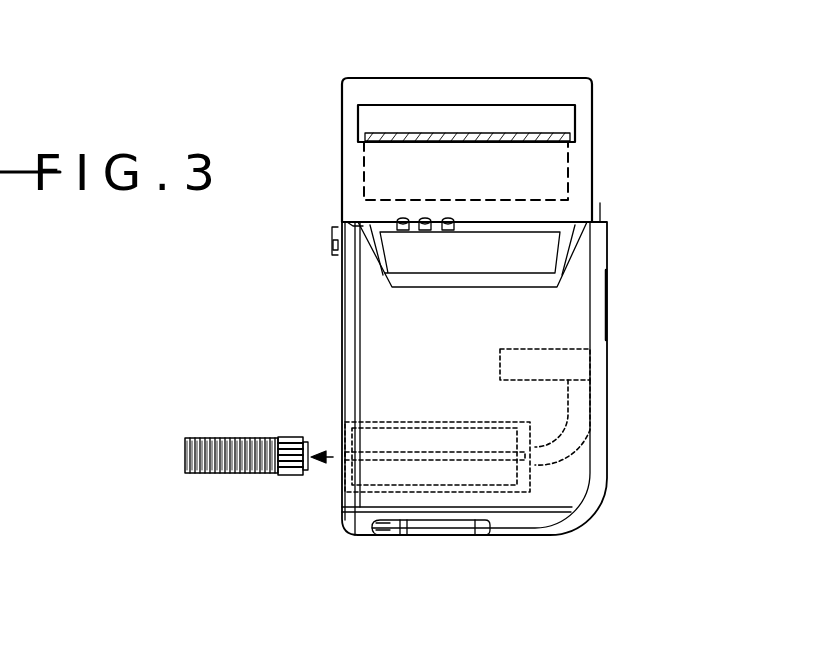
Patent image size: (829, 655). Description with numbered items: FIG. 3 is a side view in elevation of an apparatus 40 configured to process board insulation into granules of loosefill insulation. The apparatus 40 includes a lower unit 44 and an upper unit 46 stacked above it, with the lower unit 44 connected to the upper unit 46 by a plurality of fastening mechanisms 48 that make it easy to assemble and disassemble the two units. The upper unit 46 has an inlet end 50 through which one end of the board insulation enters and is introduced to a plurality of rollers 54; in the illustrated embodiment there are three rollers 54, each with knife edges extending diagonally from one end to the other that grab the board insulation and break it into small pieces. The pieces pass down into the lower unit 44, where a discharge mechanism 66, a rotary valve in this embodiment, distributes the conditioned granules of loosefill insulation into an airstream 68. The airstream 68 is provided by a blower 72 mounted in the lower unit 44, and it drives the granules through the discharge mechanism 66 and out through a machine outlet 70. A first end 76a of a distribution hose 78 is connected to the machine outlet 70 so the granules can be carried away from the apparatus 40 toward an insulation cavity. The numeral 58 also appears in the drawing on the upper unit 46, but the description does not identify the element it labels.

The apparatus 40 is at (708, 110).
The lower unit 44 is at (340, 350).
The upper unit 46 is at (342, 110).
The fastening mechanisms 48 is at (333, 230).
The inlet end 50 is at (575, 118).
The rollers 54 is at (568, 172).
The lid housing 58 is at (428, 78).
The discharge mechanism 66 is at (397, 490).
The airstream 68 is at (323, 450).
The machine outlet 70 is at (345, 462).
The blower 72 is at (565, 345).
The first end 76a is at (280, 473).
The distribution hose 78 is at (193, 440).